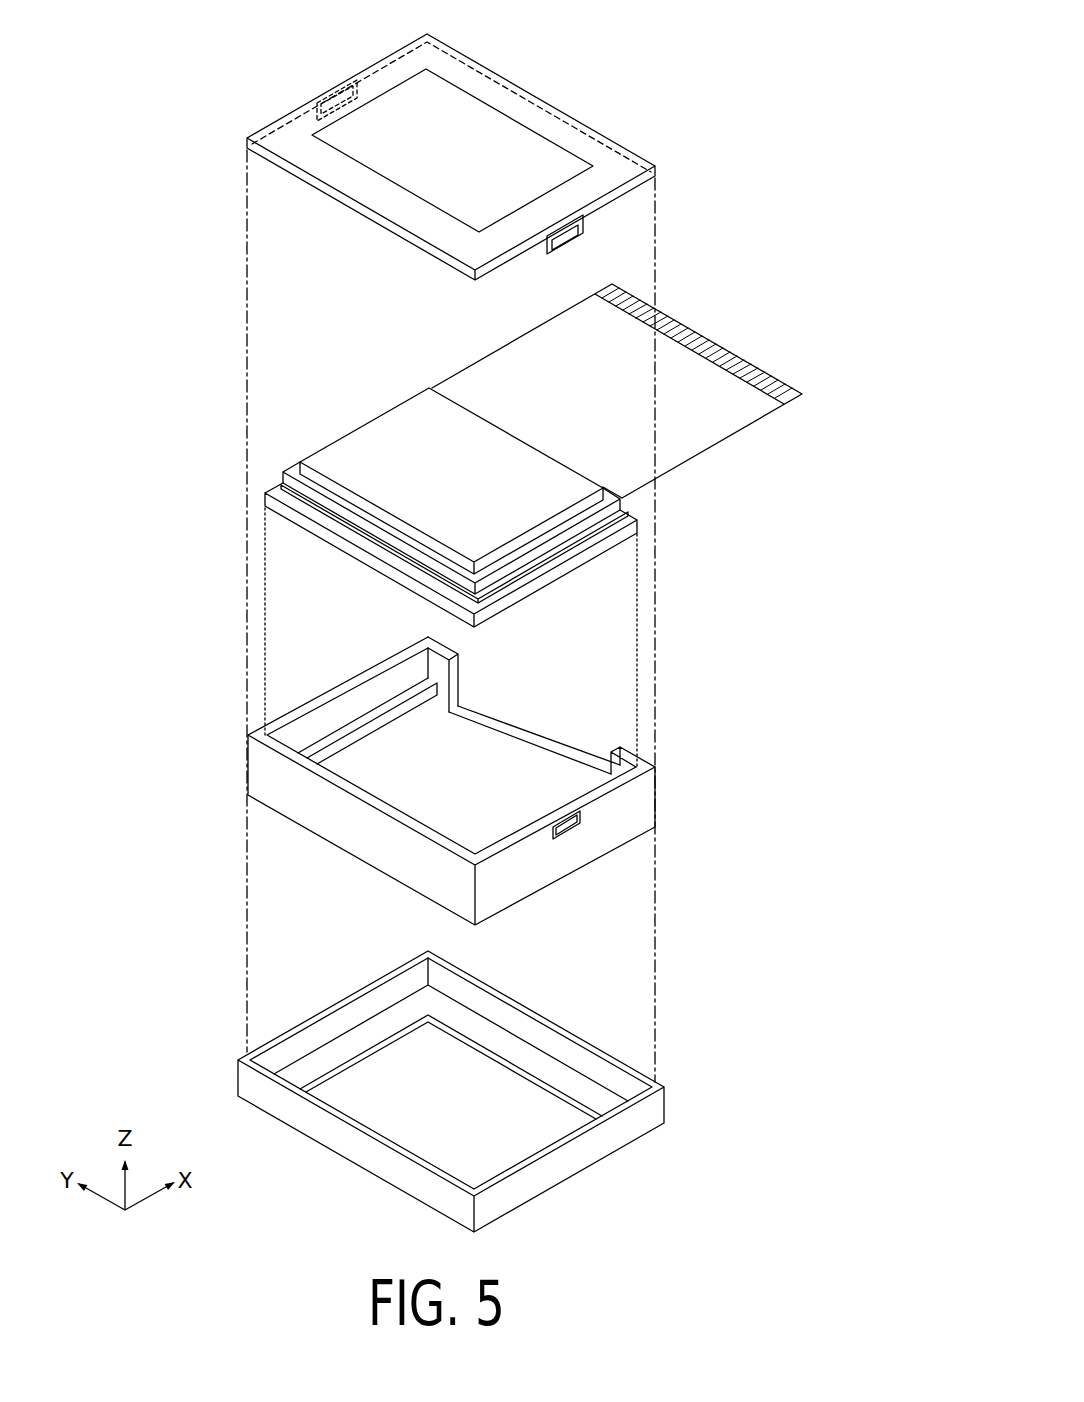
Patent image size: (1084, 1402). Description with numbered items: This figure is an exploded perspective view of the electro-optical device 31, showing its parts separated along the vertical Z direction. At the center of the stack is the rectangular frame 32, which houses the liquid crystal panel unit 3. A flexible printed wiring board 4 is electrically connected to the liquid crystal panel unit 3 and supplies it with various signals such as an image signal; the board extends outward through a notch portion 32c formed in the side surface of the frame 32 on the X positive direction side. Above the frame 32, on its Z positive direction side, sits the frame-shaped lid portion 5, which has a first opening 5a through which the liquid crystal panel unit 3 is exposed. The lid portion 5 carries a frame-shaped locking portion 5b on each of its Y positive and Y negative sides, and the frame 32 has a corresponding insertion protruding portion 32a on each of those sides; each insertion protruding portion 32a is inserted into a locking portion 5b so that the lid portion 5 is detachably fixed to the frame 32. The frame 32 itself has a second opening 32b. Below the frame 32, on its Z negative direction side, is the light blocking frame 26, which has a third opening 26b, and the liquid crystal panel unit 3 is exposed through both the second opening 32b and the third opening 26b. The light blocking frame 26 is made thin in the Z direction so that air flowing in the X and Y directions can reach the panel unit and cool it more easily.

The electro-optical device 31 is at (745, 66).
The lid portion 5 is at (512, 106).
The first opening 5a is at (463, 96).
The locking portion 5b is at (570, 254).
The liquid crystal panel unit 3 is at (344, 380).
The flexible printed wiring board 4 is at (733, 424).
The frame 32 is at (487, 789).
The insertion protruding portion 32a is at (573, 840).
The second opening 32b is at (383, 742).
The notch portion 32c is at (518, 748).
The light blocking frame 26 is at (485, 1091).
The third opening 26b is at (382, 1050).